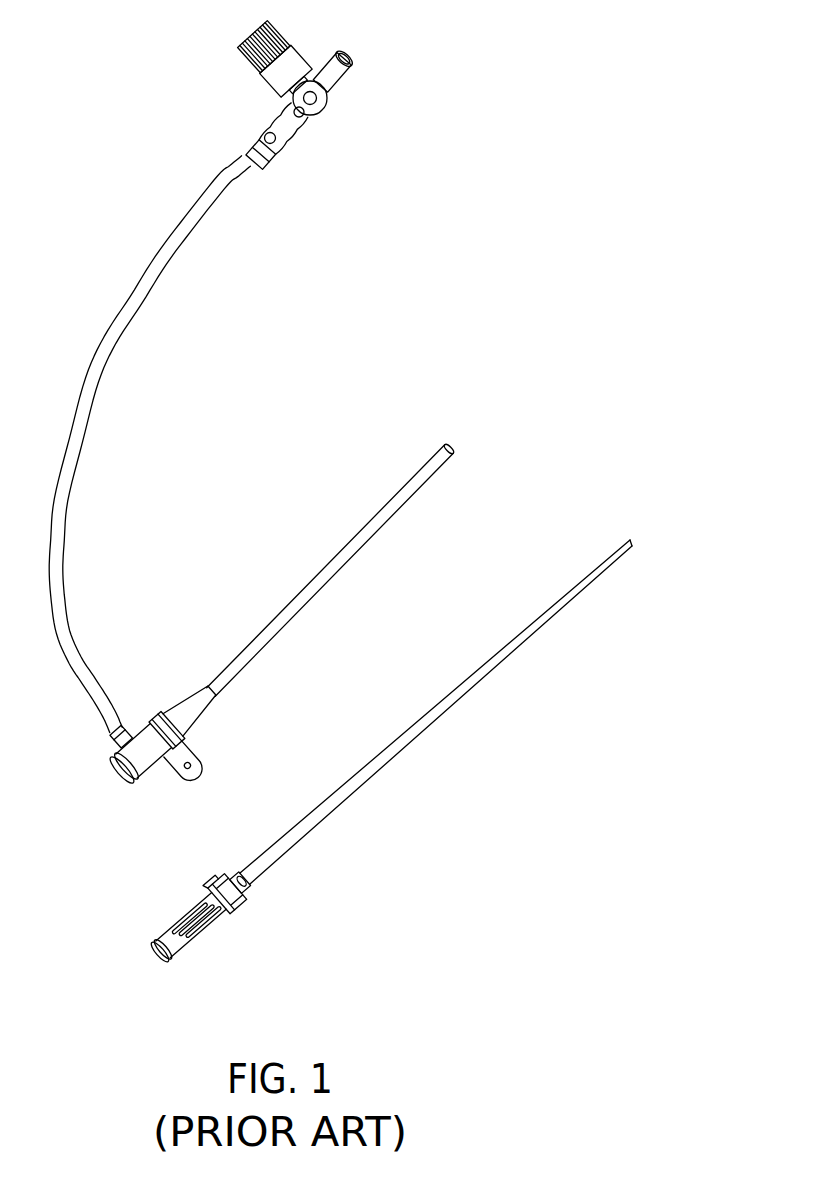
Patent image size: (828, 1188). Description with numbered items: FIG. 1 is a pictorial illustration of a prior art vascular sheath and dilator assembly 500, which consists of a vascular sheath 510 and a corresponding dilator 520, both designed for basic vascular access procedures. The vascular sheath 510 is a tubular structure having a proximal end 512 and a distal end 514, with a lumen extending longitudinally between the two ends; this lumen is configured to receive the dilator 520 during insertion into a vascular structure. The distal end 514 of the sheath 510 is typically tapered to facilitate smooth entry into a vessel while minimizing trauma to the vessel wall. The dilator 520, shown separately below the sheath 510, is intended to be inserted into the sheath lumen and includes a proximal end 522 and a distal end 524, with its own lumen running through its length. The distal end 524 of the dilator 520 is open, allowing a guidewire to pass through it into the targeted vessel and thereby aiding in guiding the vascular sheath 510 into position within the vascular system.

The vascular sheath and dilator assembly 500 is at (470, 210).
The vascular sheath 510 is at (379, 503).
The proximal end 512 is at (112, 757).
The distal end 514 is at (456, 457).
The dilator 520 is at (513, 664).
The proximal end 522 is at (151, 952).
The distal end 524 is at (634, 546).